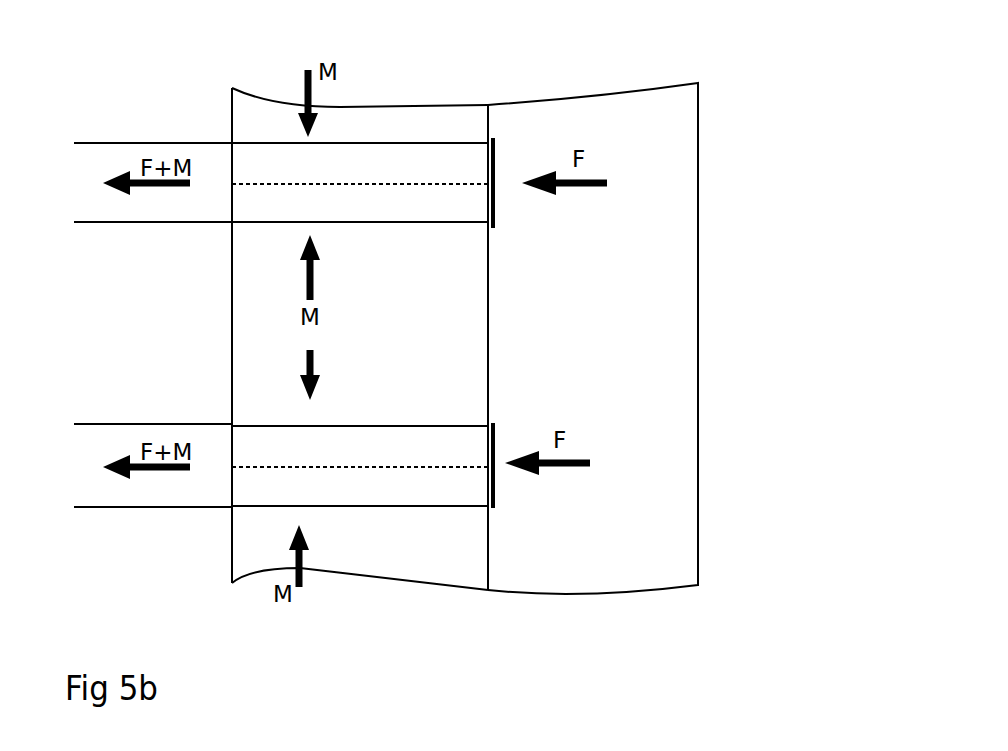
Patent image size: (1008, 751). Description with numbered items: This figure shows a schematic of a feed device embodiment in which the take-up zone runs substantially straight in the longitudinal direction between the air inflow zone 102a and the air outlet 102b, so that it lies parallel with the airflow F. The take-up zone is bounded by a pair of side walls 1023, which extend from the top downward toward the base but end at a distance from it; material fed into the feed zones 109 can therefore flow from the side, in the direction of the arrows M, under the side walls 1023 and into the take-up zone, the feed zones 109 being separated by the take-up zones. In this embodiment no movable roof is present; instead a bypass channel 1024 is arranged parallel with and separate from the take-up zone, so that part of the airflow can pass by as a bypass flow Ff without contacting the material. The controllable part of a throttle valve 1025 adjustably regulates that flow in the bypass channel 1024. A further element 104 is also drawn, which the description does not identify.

The housing 104 is at (642, 252).
The feed zone 109 is at (402, 123).
The side wall 1023 is at (323, 130).
The bypass channel 1024 is at (360, 324).
The throttle valve 1025 is at (493, 155).
The air inflow zone 102a is at (509, 172).
The air outlet 102b is at (232, 184).